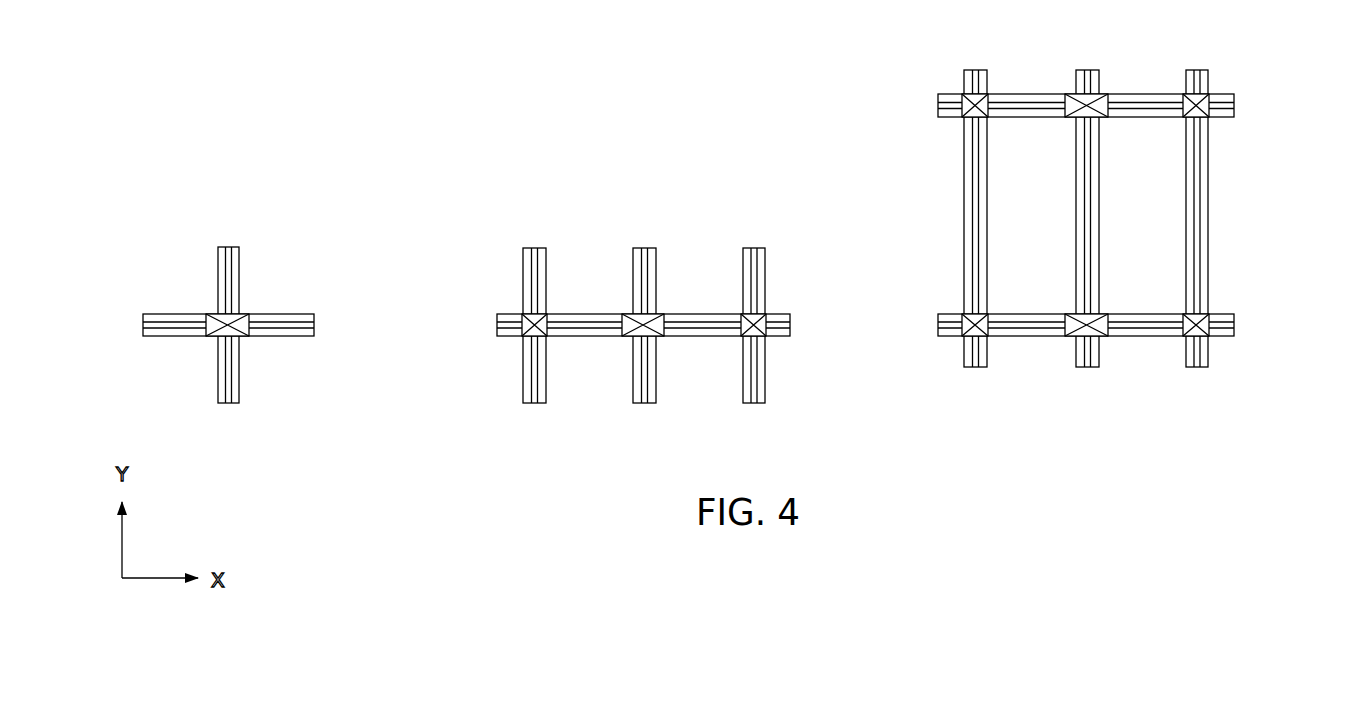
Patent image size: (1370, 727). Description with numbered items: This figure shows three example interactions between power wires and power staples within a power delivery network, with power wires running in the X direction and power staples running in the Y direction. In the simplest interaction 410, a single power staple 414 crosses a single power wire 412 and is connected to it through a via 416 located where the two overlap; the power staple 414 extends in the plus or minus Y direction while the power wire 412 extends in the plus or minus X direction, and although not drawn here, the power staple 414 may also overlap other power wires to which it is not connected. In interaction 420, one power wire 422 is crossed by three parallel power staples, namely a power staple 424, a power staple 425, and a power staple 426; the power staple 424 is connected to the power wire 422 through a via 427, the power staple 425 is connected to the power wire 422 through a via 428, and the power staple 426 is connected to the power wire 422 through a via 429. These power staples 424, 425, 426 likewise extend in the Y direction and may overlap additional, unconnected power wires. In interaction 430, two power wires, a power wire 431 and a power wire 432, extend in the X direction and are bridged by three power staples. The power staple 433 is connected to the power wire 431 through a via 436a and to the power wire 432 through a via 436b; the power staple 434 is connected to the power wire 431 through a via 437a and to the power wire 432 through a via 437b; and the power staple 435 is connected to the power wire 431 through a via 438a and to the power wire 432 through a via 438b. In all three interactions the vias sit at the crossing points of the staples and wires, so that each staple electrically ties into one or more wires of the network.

The interaction 410 is at (317, 214).
The power wire 412 is at (314, 319).
The power staple 414 is at (240, 279).
The via 416 is at (244, 337).
The interaction 420 is at (753, 218).
The power wire 422 is at (790, 318).
The power staple 424 is at (546, 278).
The power staple 425 is at (657, 264).
The power staple 426 is at (766, 262).
The via 427 is at (548, 337).
The via 428 is at (664, 337).
The via 429 is at (766, 337).
The interaction 430 is at (891, 123).
The power wire 431 is at (1234, 319).
The power wire 432 is at (1234, 107).
The power staple 433 is at (987, 265).
The power staple 434 is at (1099, 228).
The power staple 435 is at (1209, 198).
The via 436a is at (990, 337).
The via 437a is at (1108, 337).
The via 438a is at (1212, 337).
The via 436b is at (995, 93).
The via 437b is at (1106, 93).
The via 438b is at (1212, 93).